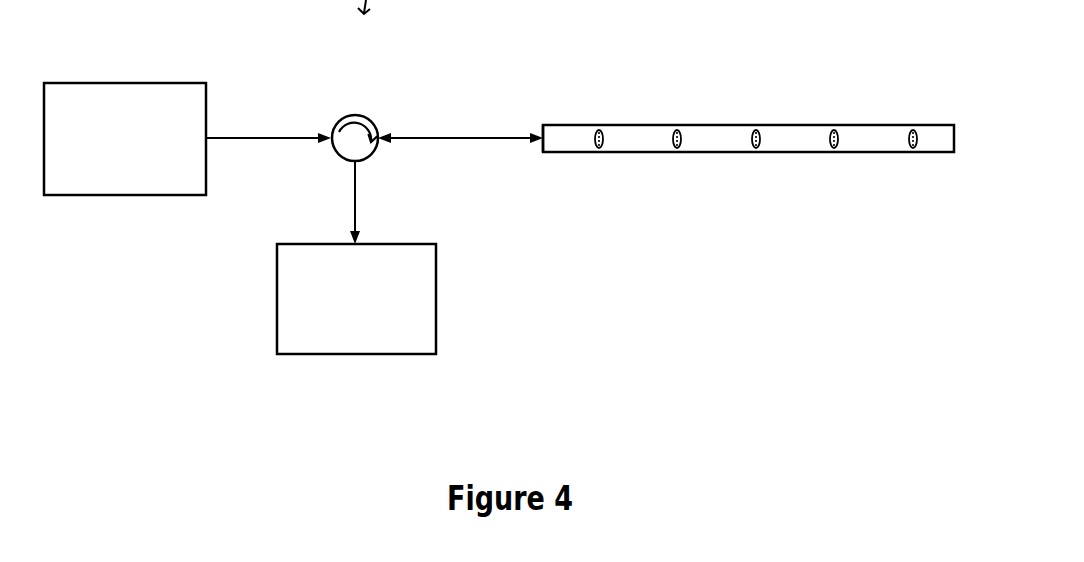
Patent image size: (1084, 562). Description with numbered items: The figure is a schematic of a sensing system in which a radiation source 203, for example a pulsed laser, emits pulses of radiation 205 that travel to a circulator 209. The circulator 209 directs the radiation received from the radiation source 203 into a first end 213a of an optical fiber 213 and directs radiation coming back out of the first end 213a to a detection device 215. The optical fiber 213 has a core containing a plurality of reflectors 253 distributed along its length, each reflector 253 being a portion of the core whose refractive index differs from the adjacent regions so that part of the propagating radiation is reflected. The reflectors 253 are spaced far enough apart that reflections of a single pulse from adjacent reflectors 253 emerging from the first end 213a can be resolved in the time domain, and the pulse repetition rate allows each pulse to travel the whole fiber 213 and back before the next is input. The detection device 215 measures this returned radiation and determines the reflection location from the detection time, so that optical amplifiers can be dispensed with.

The radiation source 203 is at (125, 139).
The pulses of radiation 205 is at (243, 138).
The circulator 209 is at (352, 115).
The optical fiber 213 is at (808, 125).
The first end 213a is at (543, 125).
The detection device 215 is at (356, 299).
The reflectors 253 is at (596, 147).